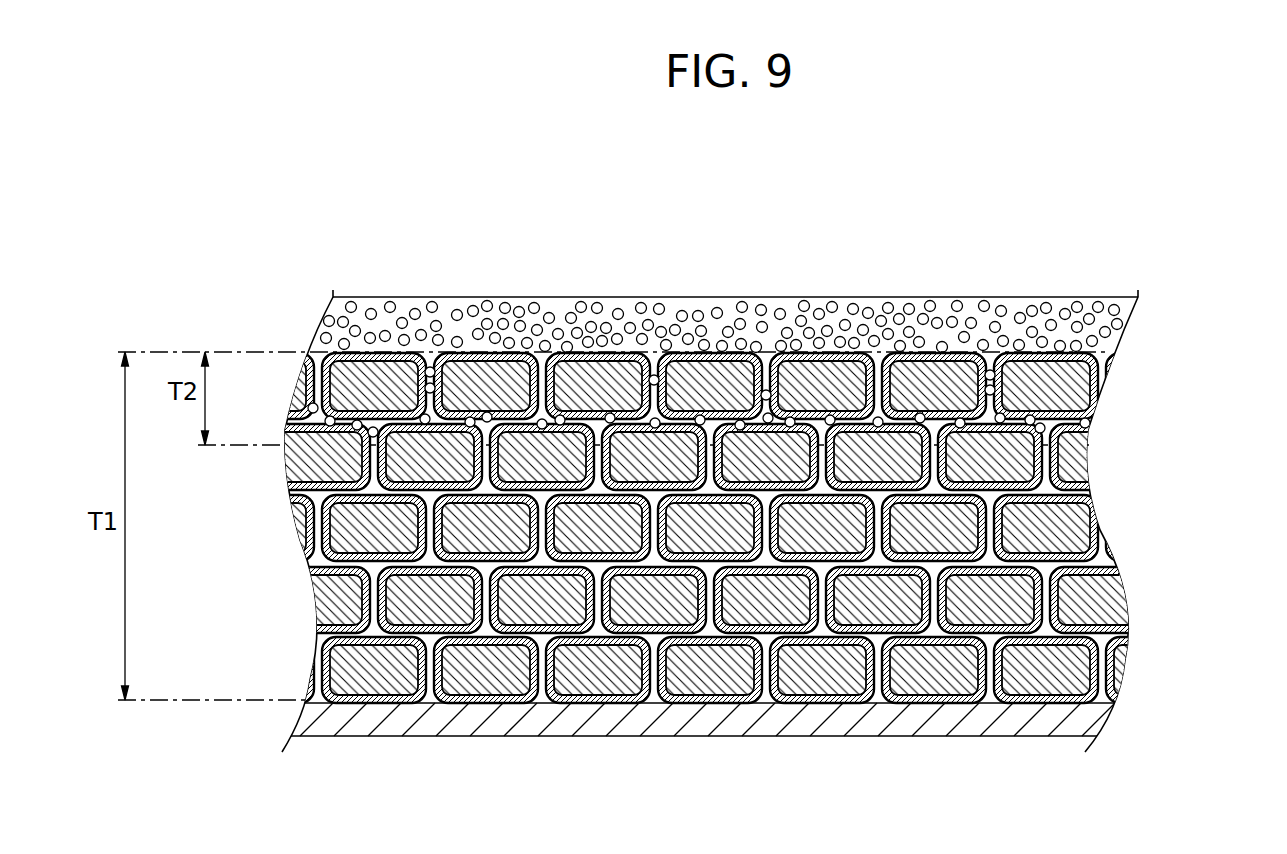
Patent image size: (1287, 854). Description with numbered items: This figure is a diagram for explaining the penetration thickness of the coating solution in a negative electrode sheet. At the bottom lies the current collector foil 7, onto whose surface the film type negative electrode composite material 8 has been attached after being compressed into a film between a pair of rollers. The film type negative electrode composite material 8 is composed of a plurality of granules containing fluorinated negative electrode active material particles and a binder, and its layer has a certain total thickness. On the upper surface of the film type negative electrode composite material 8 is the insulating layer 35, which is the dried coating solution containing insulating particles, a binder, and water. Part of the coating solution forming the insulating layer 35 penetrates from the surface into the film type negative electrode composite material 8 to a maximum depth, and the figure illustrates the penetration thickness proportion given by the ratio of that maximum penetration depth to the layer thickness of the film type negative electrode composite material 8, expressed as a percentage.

The insulating layer 35 is at (1107, 343).
The film type negative electrode composite material 8 is at (1148, 365).
The current collector foil 7 is at (1082, 720).